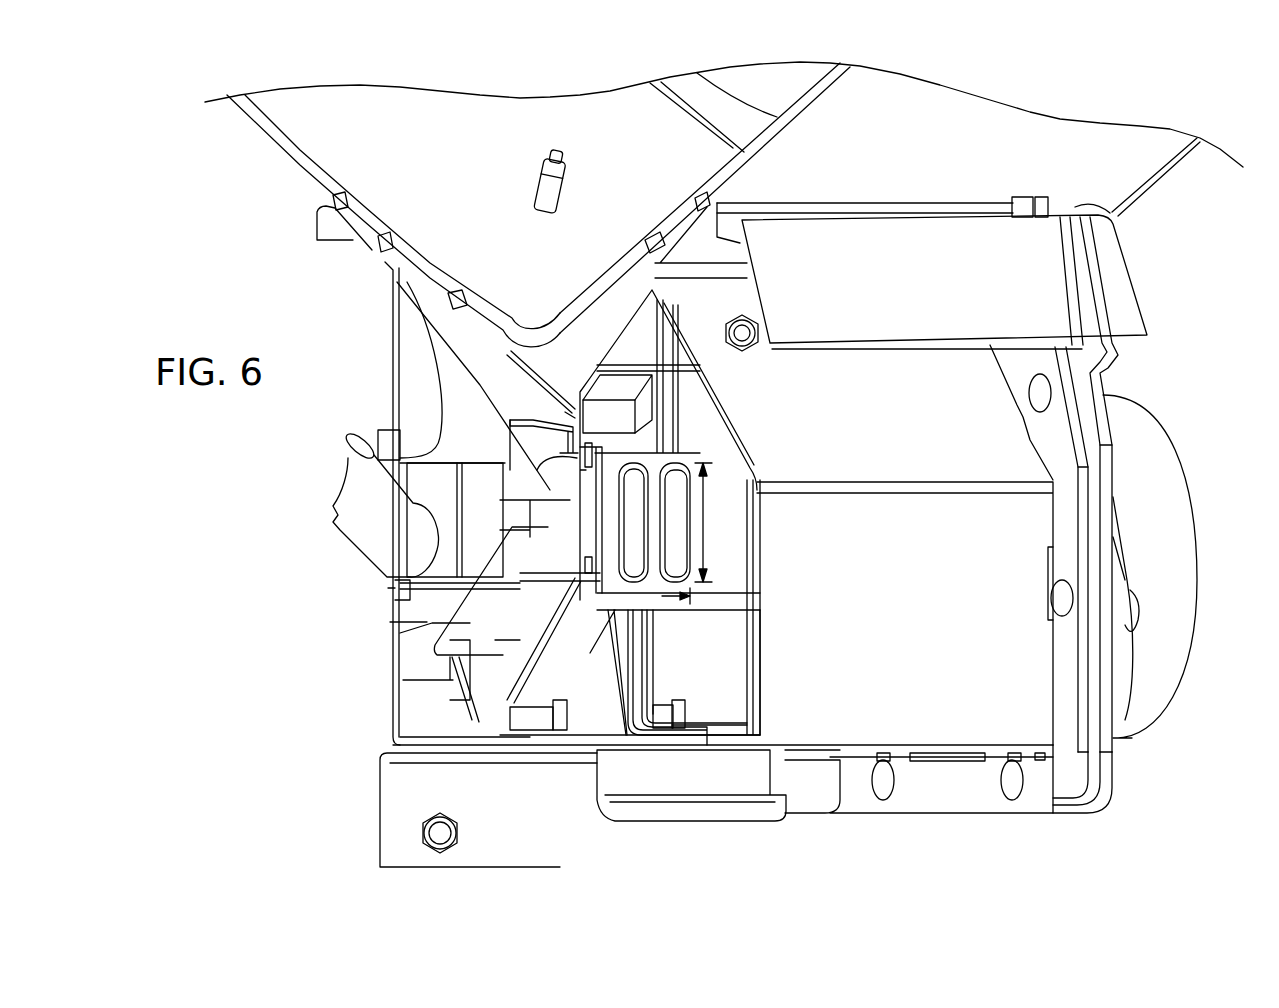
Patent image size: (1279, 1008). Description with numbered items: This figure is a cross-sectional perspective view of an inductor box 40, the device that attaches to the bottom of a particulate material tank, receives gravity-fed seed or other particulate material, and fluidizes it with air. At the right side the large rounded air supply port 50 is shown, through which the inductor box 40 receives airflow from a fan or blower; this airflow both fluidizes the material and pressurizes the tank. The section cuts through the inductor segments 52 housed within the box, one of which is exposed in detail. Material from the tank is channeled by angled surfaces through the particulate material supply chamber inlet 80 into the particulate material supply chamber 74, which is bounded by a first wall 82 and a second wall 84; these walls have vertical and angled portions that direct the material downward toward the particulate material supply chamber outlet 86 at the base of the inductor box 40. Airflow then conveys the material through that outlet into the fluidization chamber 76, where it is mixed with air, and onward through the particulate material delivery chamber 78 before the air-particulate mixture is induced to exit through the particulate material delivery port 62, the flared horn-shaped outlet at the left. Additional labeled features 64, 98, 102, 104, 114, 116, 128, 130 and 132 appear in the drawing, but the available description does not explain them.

The inductor box 40 is at (1170, 822).
The air supply port 50 is at (1187, 620).
The inductor segments 52 is at (268, 820).
The particulate material delivery port 62 is at (332, 515).
The heat exchanger sheet 64 is at (645, 328).
The particulate material supply chamber 74 is at (529, 632).
The fluidization chamber 76 is at (427, 622).
The particulate material delivery chamber 78 is at (474, 521).
The particulate material supply chamber inlet 80 is at (570, 392).
The first wall 82 is at (621, 826).
The second wall 84 is at (470, 643).
The particulate material supply chamber outlet 86 is at (505, 638).
The clip 98 is at (400, 583).
The support bracket 102 is at (548, 487).
The housing wall 104 is at (733, 613).
The tab 114 is at (537, 717).
The rib 116 is at (563, 667).
The slot 128 is at (617, 480).
The slot length 130 is at (705, 522).
The slot spacing 132 is at (675, 607).